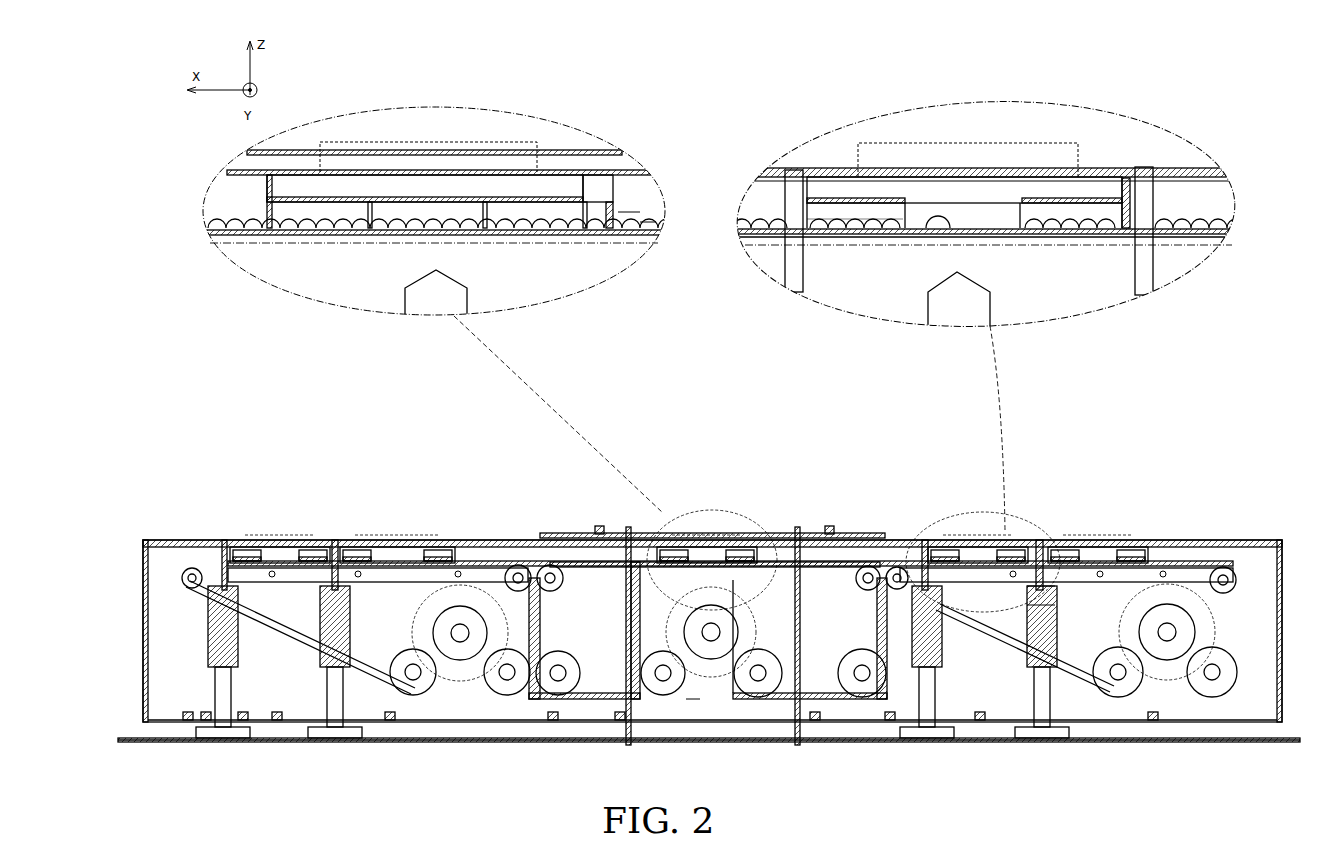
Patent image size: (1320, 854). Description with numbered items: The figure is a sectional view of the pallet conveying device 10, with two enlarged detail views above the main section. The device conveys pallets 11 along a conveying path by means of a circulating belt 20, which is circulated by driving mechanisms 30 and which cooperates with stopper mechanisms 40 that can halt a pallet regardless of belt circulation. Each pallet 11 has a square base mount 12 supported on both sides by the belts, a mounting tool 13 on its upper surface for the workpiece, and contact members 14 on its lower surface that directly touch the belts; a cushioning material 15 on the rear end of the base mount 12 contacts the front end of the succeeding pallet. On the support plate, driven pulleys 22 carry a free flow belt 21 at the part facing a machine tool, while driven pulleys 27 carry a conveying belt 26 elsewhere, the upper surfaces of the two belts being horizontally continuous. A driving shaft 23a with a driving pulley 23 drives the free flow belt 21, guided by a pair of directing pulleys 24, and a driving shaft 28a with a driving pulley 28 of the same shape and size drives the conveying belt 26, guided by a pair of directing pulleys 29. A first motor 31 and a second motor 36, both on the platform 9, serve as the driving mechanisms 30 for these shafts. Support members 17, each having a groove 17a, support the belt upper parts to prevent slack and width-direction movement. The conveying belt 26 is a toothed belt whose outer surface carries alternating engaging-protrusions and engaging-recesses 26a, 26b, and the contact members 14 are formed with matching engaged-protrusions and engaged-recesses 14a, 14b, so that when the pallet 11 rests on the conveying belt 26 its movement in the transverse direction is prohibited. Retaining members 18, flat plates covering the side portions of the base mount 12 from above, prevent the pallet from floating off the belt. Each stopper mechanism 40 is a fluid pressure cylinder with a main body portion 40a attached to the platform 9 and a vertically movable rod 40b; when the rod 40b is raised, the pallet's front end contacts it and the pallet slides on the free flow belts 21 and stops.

The platform 9 is at (745, 730).
The pallet conveying device 10 is at (692, 411).
The pallet 11 is at (553, 175).
The base mount 12 is at (378, 170).
The mounting tool 13 is at (478, 142).
The contact member 14 is at (267, 200).
The engaged-protrusion 14a is at (298, 228).
The engaged-recess 14b is at (320, 228).
The cushioning material 15 is at (615, 228).
The support member 17 is at (565, 235).
The groove 17a is at (380, 243).
The retaining member 18 is at (318, 150).
The circulating belt 20 is at (1250, 548).
The free flow belt 21 is at (938, 228).
The driven pulley 22 is at (188, 590).
The driving pulley 23 is at (468, 662).
The driving shaft 23a is at (420, 615).
The directing pulley 24 is at (405, 692).
The conveying belt 26 is at (436, 278).
The engaging-protrusion 26a is at (615, 227).
The engaging-recess 26b is at (628, 205).
The driven pulley 27 is at (557, 590).
The driving pulley 28 is at (712, 660).
The driving shaft 28a is at (740, 610).
The directing pulley 29 is at (642, 615).
The driving mechanism 30 is at (515, 565).
The first motor 31 is at (460, 700).
The second motor 36 is at (692, 699).
The stopper mechanism 40 is at (205, 670).
The main body portion 40a is at (1030, 606).
The rod 40b is at (790, 265).